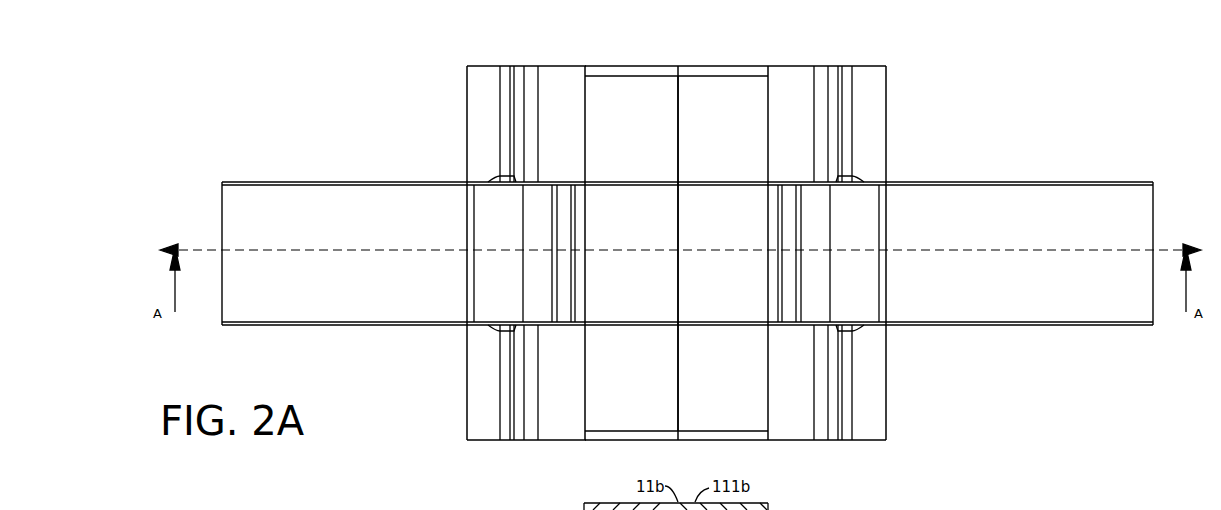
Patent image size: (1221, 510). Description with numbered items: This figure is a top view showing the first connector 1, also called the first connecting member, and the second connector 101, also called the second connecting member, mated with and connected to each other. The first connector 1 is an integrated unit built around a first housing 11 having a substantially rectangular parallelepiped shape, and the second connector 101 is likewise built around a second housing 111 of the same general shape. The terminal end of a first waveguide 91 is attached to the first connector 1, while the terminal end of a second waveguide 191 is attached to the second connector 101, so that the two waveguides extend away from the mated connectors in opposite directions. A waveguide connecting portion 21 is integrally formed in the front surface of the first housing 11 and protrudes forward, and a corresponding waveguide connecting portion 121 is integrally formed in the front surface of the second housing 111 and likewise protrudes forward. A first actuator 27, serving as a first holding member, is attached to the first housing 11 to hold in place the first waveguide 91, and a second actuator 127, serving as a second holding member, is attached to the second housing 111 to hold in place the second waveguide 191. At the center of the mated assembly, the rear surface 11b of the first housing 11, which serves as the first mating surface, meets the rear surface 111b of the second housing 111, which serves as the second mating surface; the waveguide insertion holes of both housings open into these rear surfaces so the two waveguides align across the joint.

The first connector 1 is at (463, 67).
The second connector 101 is at (896, 68).
The first housing 11 is at (603, 66).
The second housing 111 is at (758, 66).
The rear surface 11b is at (680, 401).
The rear surface 111b is at (683, 410).
The waveguide connecting portion 21 is at (467, 432).
The waveguide connecting portion 121 is at (887, 434).
The first actuator 27 is at (484, 300).
The second actuator 127 is at (864, 313).
The first waveguide 91 is at (278, 196).
The second waveguide 191 is at (1076, 196).